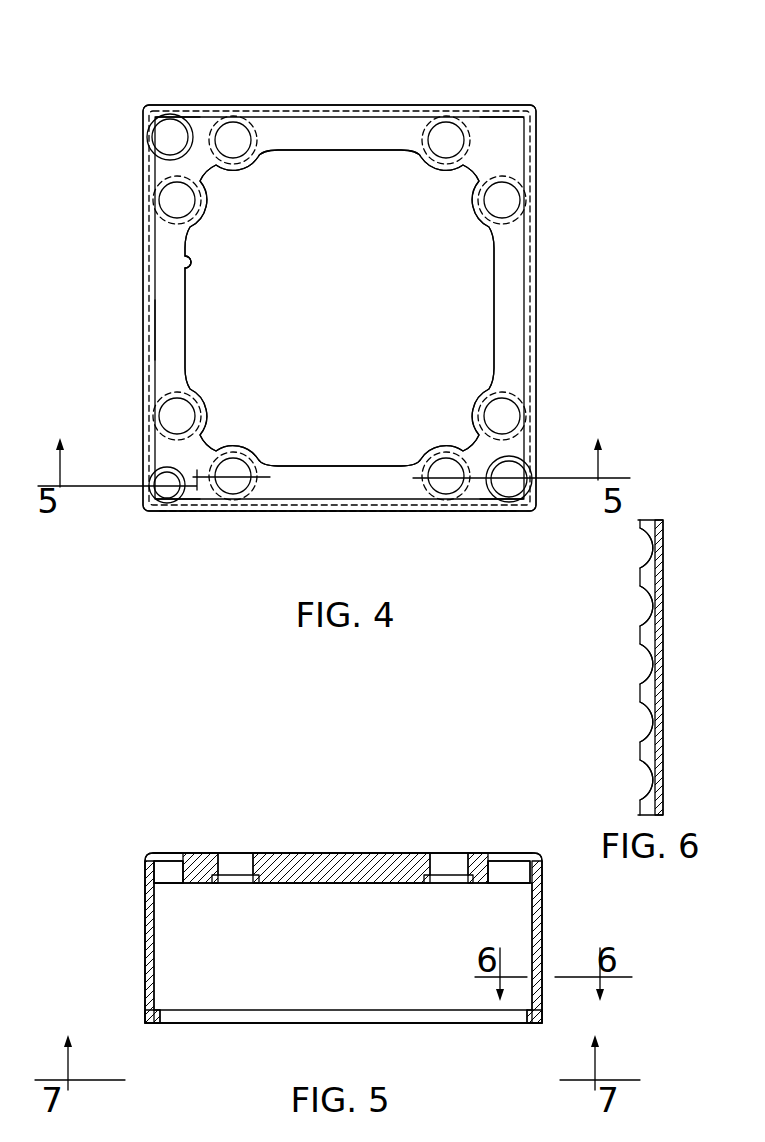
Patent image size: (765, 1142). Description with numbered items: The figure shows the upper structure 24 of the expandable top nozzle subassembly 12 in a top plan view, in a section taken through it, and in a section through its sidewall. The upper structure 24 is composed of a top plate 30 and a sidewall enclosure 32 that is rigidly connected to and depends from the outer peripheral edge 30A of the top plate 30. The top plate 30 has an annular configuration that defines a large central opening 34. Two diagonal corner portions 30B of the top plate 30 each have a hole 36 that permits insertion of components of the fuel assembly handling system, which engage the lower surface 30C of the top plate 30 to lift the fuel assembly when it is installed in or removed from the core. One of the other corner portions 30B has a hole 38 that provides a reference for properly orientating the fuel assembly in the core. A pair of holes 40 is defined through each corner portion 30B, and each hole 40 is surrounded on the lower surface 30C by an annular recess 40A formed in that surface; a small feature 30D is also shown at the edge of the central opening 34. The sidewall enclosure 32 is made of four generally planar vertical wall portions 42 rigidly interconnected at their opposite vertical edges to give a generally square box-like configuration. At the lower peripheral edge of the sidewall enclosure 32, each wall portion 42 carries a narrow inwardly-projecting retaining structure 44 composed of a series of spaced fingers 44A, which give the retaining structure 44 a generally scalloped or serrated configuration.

In FIG. 4, the top nozzle subassembly 12 is at (552, 84).
In FIG. 5, the top nozzle subassembly 12 is at (107, 838).
In FIG. 4, the upper structure 24 is at (146, 218).
In FIG. 5, the upper structure 24 is at (547, 889).
In FIG. 4, the top plate 30 is at (517, 266).
In FIG. 5, the top plate 30 is at (322, 853).
In FIG. 4, the outer peripheral edge 30A is at (164, 332).
In FIG. 5, the outer peripheral edge 30A is at (160, 869).
In FIG. 4, the corner portions 30B is at (212, 162).
In FIG. 5, the corner portions 30B is at (205, 853).
In FIG. 5, the lower surface 30C is at (316, 885).
In FIG. 4, the plate notch 30D is at (183, 264).
In FIG. 4, the sidewall enclosure 32 is at (536, 300).
In FIG. 5, the sidewall enclosure 32 is at (145, 937).
In FIG. 4, the central opening 34 is at (329, 261).
In FIG. 4, the hole 36 is at (165, 133).
In FIG. 5, the hole 36 is at (511, 856).
In FIG. 4, the hole 38 is at (167, 503).
In FIG. 5, the hole 38 is at (167, 856).
In FIG. 4, the holes 40 is at (181, 198).
In FIG. 5, the holes 40 is at (222, 866).
In FIG. 4, the annular recess 40A is at (263, 148).
In FIG. 5, the annular recess 40A is at (221, 881).
In FIG. 6, the wall portions 42 is at (664, 560).
In FIG. 5, the wall portions 42 is at (147, 985).
In FIG. 4, the retaining structure 44 is at (340, 510).
In FIG. 6, the retaining structure 44 is at (660, 508).
In FIG. 5, the retaining structure 44 is at (160, 1026).
In FIG. 6, the fingers 44A is at (646, 648).